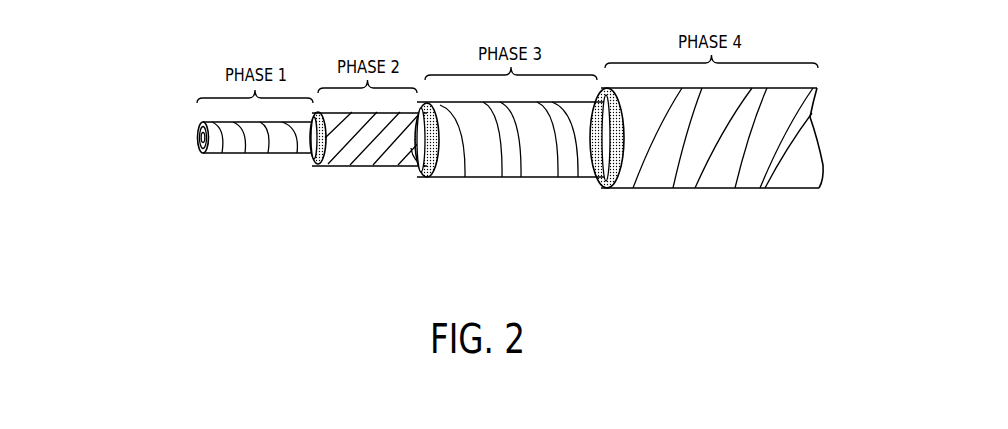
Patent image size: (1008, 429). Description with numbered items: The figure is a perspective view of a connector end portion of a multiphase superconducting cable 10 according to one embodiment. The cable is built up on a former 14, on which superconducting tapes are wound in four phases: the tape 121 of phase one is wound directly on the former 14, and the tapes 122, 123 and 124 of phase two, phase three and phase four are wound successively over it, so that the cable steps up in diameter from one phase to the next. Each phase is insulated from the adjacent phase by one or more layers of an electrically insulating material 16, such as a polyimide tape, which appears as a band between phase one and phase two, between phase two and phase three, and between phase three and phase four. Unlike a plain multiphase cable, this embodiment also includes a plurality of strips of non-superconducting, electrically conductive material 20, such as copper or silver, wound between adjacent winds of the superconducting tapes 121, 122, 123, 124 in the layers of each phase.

The multiphase superconducting cable 10 is at (162, 91).
The former 14 is at (200, 140).
The superconducting tape of phase 1 121 is at (208, 155).
The superconducting tape of phase 2 122 is at (348, 166).
The superconducting tape of phase 3 123 is at (490, 172).
The superconducting tape of phase 4 124 is at (653, 184).
The electrically insulating material 16 is at (312, 162).
The non-superconducting electrically conductive material 20 is at (240, 153).